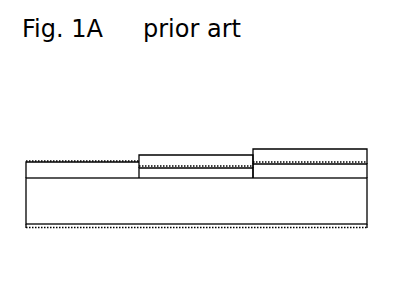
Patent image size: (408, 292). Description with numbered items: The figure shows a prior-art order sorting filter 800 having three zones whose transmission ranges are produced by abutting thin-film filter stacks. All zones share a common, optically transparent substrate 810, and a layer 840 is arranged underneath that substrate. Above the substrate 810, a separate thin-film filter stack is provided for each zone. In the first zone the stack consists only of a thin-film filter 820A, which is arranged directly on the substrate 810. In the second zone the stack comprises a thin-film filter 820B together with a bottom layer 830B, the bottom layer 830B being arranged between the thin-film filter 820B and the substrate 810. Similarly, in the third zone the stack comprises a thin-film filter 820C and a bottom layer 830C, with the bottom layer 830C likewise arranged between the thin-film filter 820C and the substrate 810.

The order sorting filter 800 is at (78, 98).
The substrate 810 is at (143, 204).
The layer 840 is at (98, 229).
The thin-film filter 820A is at (49, 161).
The thin-film filter 820B is at (152, 154).
The bottom layer 830B is at (215, 172).
The thin-film filter 820C is at (279, 148).
The bottom layer 830C is at (330, 173).